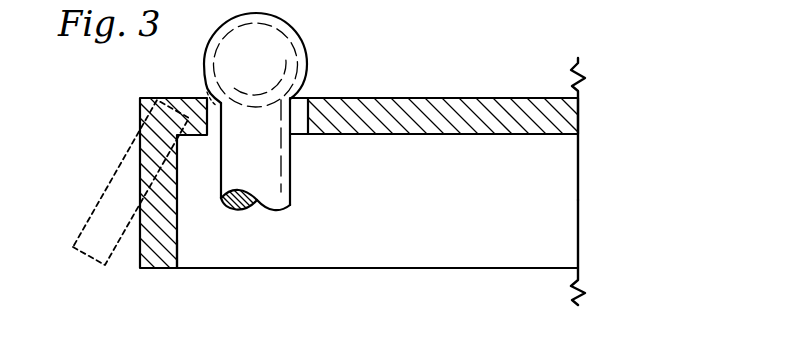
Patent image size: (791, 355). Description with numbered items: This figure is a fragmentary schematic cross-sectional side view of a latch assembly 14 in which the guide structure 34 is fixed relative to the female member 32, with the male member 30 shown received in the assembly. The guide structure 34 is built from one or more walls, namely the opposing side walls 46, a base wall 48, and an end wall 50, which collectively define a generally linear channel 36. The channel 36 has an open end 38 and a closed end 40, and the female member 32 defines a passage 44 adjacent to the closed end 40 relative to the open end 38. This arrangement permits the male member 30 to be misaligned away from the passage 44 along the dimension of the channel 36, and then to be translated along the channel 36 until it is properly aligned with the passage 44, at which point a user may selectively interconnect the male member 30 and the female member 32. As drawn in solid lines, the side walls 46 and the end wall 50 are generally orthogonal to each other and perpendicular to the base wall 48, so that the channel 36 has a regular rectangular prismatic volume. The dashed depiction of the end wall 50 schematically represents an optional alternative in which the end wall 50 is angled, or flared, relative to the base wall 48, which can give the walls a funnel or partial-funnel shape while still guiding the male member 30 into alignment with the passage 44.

The latch assembly 14 is at (98, 88).
The male member 30 is at (296, 171).
The female member 32 is at (350, 94).
The guide structure 34 is at (254, 274).
The channel 36 is at (583, 180).
The open end 38 is at (580, 258).
The closed end 40 is at (178, 254).
The passage 44 is at (219, 102).
The side walls 46 is at (368, 269).
The base wall 48 is at (500, 97).
The end wall 50 is at (140, 187).